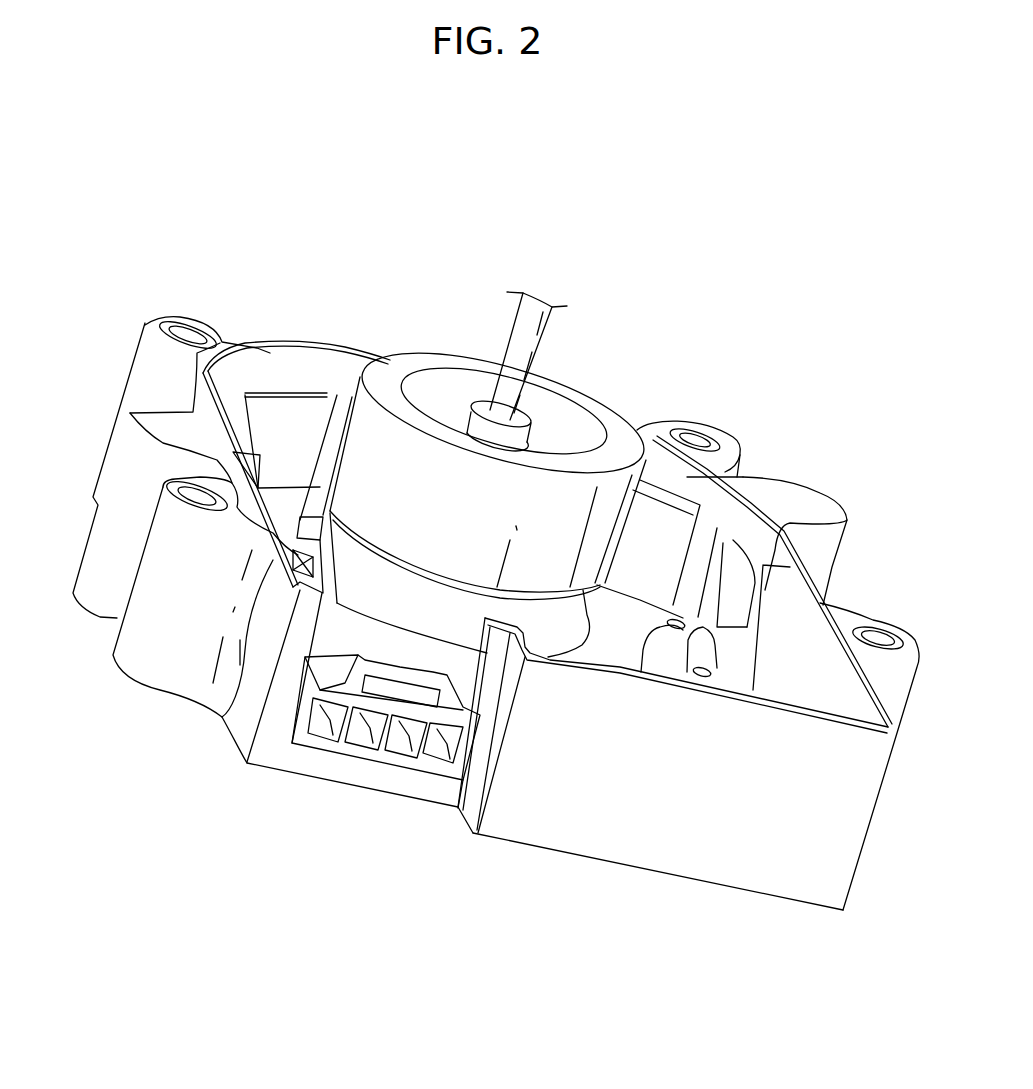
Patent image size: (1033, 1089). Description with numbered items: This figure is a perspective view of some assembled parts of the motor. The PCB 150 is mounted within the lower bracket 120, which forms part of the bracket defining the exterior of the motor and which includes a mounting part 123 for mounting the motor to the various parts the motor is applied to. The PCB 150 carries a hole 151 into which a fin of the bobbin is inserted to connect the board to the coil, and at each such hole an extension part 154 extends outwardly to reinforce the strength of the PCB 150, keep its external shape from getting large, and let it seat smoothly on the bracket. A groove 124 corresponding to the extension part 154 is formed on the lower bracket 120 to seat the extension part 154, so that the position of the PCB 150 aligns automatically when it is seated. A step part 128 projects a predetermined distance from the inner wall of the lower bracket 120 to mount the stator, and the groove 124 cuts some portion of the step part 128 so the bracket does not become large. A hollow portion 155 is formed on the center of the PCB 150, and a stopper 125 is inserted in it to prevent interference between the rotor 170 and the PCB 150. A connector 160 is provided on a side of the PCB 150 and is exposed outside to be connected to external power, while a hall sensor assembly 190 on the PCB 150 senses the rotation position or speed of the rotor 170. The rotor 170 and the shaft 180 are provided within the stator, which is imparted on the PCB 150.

The lower bracket 120 is at (795, 483).
The mounting part 123 is at (153, 425).
The groove 124 is at (743, 630).
The stopper 125 is at (403, 600).
The step part 128 is at (713, 450).
The PCB 150 is at (613, 638).
The hole 151 is at (641, 672).
The extension part 154 is at (697, 677).
The hollow portion 155 is at (228, 697).
The connector 160 is at (297, 718).
The rotor 170 is at (597, 412).
The shaft 180 is at (520, 332).
The hall sensor assembly 190 is at (325, 470).